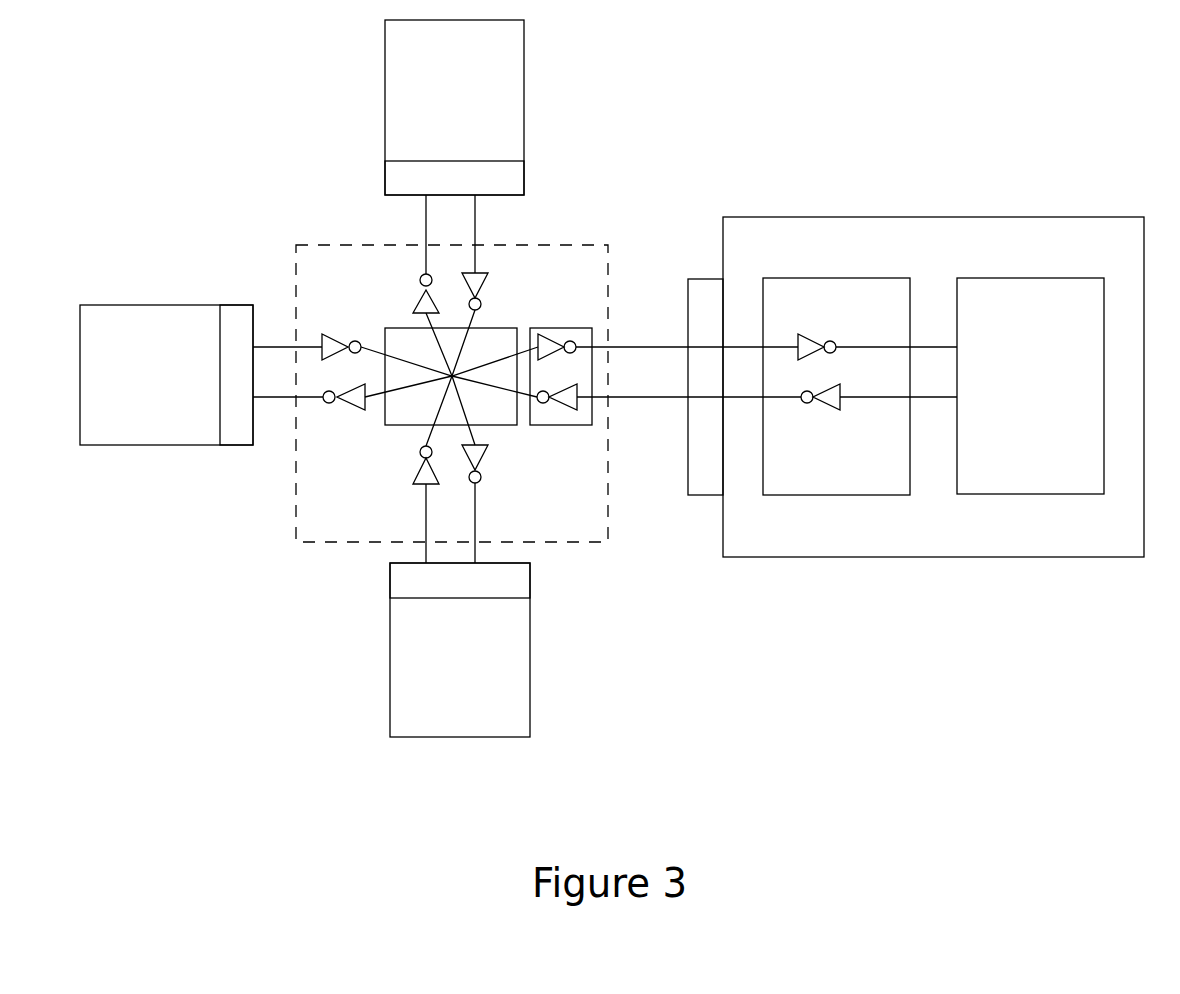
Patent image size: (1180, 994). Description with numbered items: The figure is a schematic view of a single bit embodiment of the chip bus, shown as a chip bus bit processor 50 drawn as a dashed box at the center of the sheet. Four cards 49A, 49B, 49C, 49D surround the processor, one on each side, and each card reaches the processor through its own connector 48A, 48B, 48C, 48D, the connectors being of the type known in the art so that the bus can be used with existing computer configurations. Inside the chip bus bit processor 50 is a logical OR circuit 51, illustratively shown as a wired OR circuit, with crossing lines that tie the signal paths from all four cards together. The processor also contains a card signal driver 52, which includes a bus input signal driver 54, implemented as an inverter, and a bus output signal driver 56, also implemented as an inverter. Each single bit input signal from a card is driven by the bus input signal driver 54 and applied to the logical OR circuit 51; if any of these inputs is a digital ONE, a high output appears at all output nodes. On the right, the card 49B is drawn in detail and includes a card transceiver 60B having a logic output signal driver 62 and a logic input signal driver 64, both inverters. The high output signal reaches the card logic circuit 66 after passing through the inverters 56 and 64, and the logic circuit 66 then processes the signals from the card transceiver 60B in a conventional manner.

The card 49A is at (524, 35).
The connector 48A is at (524, 175).
The card 49B is at (1068, 217).
The connector 48B is at (697, 279).
The card 49C is at (530, 675).
The connector 48C is at (530, 577).
The card 49D is at (103, 445).
The connector 48D is at (232, 445).
The chip bus bit processor 50 is at (342, 282).
The logical OR circuit 51 is at (500, 425).
The card signal driver 52 is at (585, 388).
The bus input signal driver 54 is at (573, 402).
The bus output signal driver 56 is at (541, 338).
The card transceiver 60B is at (793, 278).
The logic output signal driver 62 is at (843, 404).
The logic input signal driver 64 is at (805, 338).
The logic circuit 66 is at (983, 278).